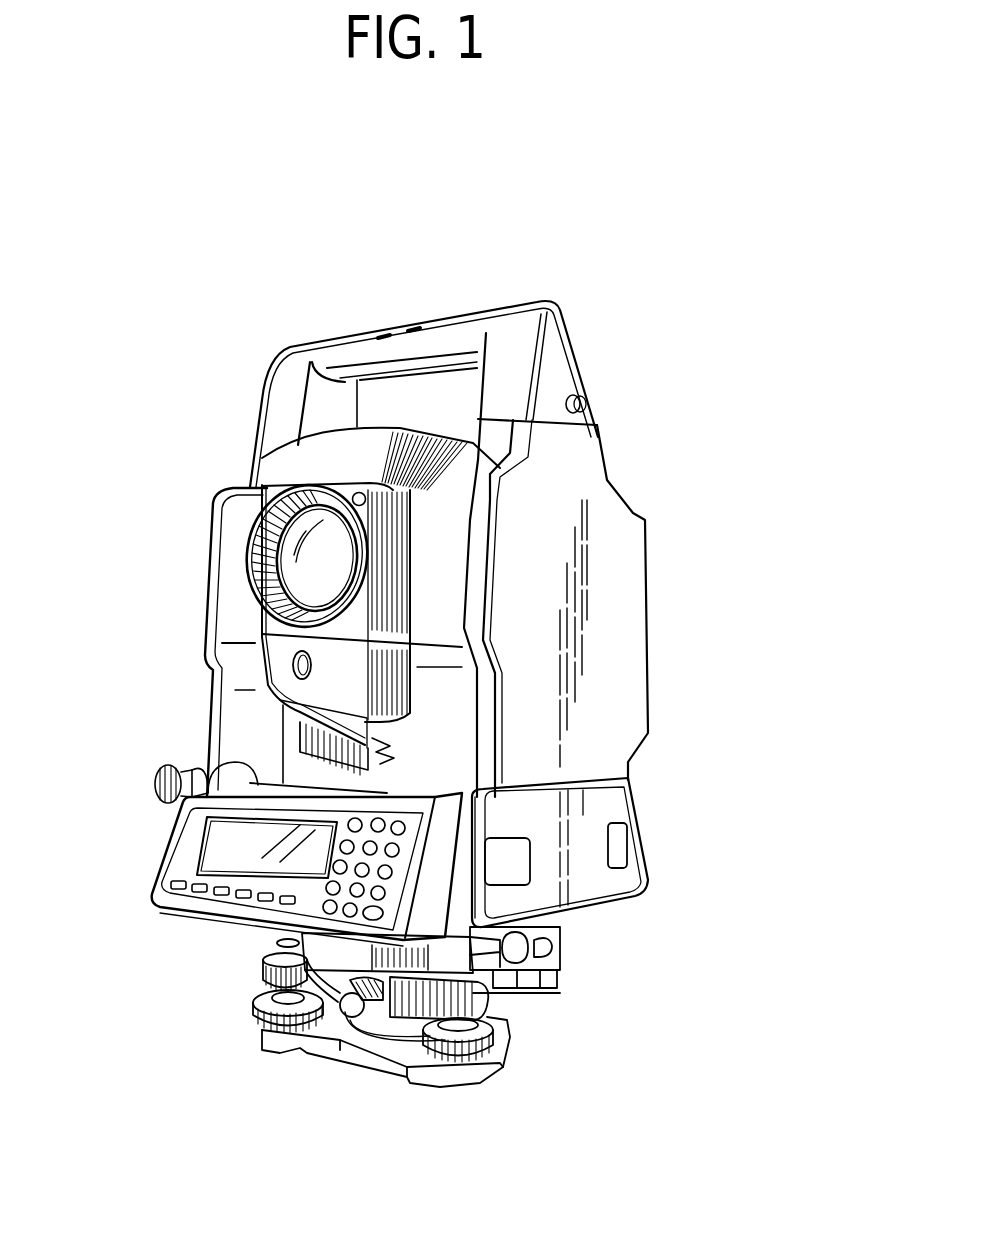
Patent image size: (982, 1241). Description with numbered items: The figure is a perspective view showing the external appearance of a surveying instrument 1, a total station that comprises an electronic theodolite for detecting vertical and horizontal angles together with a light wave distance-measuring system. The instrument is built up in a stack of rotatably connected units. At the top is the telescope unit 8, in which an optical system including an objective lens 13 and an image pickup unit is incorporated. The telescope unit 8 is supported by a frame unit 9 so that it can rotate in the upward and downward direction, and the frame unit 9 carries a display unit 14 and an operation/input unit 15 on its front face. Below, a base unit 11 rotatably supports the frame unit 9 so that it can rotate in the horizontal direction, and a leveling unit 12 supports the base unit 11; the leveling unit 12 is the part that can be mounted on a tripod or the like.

The surveying instrument 1 is at (712, 153).
The telescope unit 8 is at (317, 465).
The frame unit 9 is at (633, 515).
The base unit 11 is at (565, 968).
The leveling unit 12 is at (505, 1058).
The objective lens 13 is at (262, 563).
The display unit 14 is at (240, 832).
The operation/input unit 15 is at (160, 882).